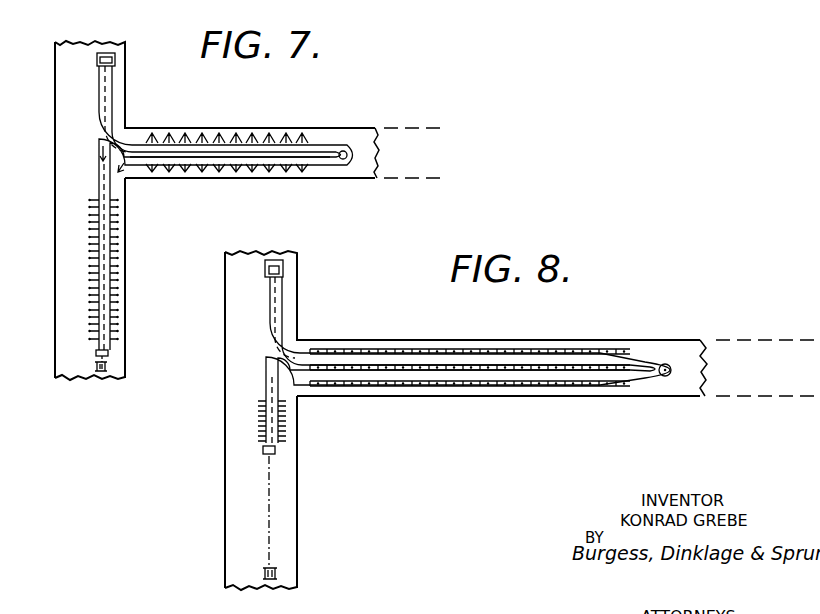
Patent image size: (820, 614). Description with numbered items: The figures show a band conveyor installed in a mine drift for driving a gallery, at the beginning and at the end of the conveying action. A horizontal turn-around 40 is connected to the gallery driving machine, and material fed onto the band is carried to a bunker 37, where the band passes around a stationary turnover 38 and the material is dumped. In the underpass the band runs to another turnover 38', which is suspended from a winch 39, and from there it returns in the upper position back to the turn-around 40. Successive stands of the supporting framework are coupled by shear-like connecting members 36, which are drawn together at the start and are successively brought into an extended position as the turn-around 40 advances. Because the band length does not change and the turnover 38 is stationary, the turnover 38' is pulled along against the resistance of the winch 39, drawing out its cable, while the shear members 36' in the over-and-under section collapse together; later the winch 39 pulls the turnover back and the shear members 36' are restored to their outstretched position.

In FIG. 7, the shear-like connecting members 36 is at (227, 132).
In FIG. 8, the shear-like connecting members 36 is at (470, 347).
In FIG. 7, the shear members 36' is at (89, 269).
In FIG. 8, the shear members 36' is at (296, 421).
In FIG. 7, the bunker 37 is at (100, 53).
In FIG. 8, the bunker 37 is at (268, 260).
In FIG. 7, the turnover 38 is at (121, 38).
In FIG. 8, the turnover 38 is at (300, 263).
In FIG. 7, the turnover 38' is at (103, 380).
In FIG. 8, the turnover 38' is at (299, 454).
In FIG. 7, the winch 39 is at (108, 367).
In FIG. 8, the winch 39 is at (278, 572).
In FIG. 7, the horizontal turn-around 40 is at (343, 150).
In FIG. 8, the horizontal turn-around 40 is at (662, 363).